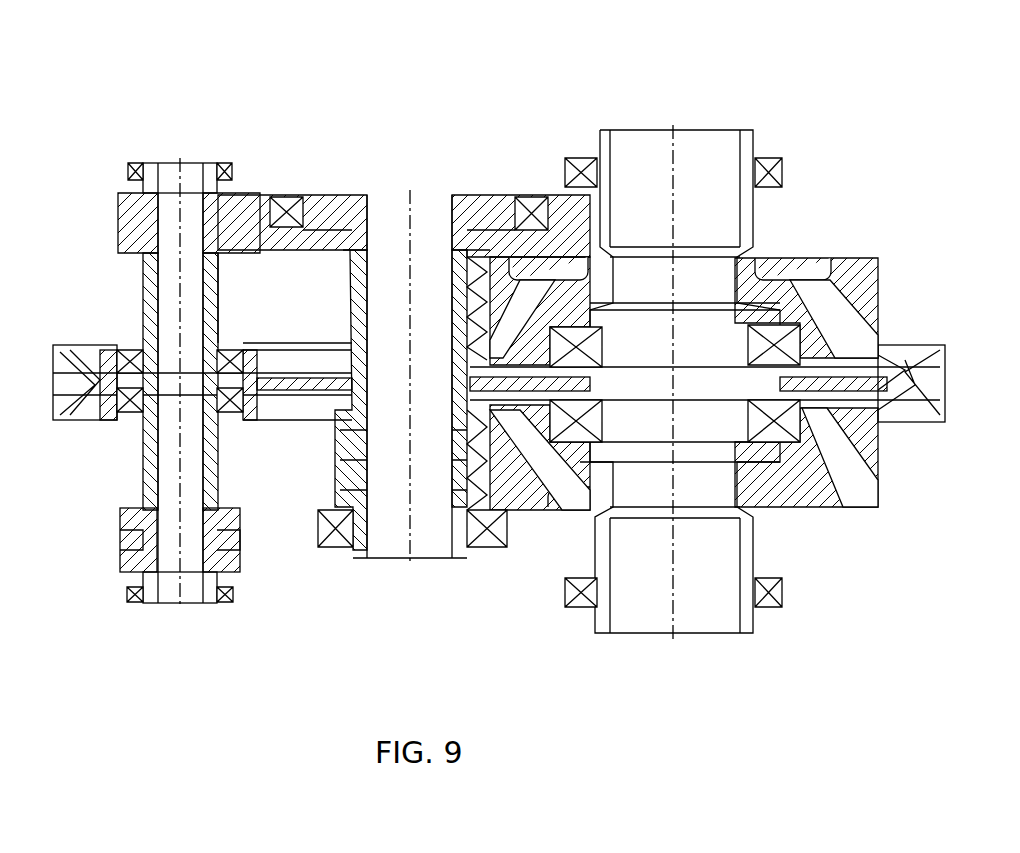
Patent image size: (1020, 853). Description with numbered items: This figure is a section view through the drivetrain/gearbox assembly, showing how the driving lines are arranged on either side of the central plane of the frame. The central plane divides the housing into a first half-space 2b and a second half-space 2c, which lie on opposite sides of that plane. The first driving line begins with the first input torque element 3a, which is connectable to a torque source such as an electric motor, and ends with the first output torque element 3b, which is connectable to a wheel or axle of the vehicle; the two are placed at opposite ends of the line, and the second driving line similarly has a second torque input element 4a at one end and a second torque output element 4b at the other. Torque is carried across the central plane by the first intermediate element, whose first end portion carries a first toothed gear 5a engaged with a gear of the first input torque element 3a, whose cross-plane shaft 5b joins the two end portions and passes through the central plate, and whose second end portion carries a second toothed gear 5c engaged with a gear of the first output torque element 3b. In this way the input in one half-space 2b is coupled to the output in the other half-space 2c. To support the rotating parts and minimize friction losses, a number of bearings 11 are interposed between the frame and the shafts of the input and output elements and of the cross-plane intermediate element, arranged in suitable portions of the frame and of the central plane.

The first half-space 2b is at (304, 305).
The second half-space 2c is at (304, 473).
The first input torque element 3a is at (172, 225).
The first output torque element 3b is at (843, 478).
The second torque input element 4a is at (177, 547).
The second torque output element 4b is at (837, 282).
The first toothed gear 5a is at (307, 237).
The cross-plane shaft 5b is at (458, 407).
The second toothed gear 5c is at (465, 487).
The bearings 11 is at (782, 677).